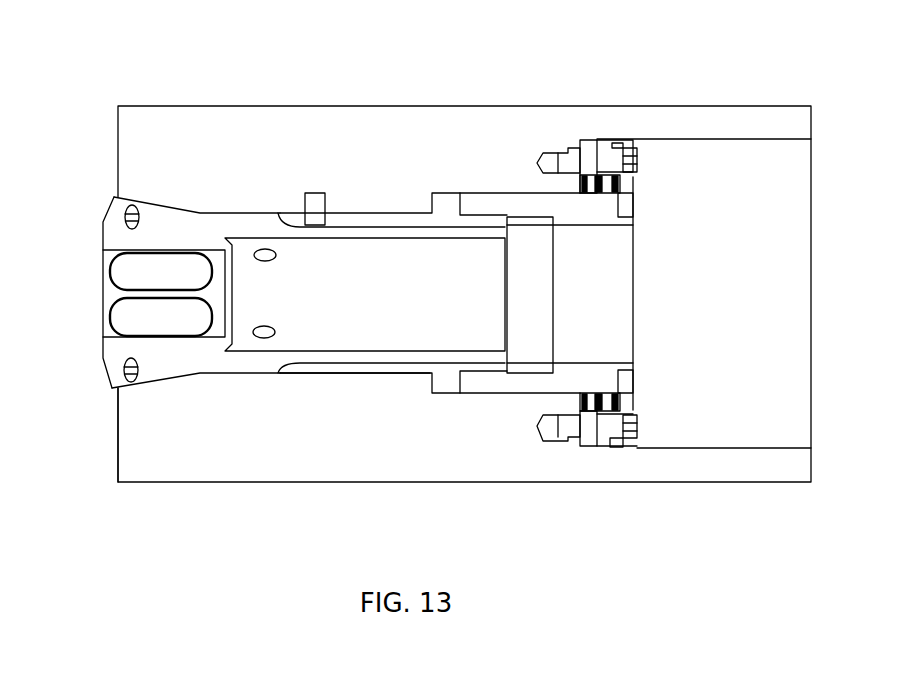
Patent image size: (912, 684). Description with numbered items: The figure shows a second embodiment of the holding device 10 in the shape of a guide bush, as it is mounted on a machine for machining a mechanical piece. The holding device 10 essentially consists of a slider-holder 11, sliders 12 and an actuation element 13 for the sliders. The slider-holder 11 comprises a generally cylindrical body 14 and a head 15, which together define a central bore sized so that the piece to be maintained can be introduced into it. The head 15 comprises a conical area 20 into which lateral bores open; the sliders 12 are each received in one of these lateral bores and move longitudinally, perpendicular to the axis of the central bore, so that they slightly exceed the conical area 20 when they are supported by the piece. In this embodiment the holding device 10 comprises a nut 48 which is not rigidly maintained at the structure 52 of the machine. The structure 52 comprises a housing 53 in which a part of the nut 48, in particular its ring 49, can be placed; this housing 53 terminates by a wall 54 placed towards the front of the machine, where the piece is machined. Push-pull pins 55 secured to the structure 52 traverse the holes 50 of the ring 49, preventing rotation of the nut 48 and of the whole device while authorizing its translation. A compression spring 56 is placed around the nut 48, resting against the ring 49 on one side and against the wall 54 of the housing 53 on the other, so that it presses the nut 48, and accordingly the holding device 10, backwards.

The holding device 10 is at (100, 207).
The slider-holder 11 is at (342, 375).
The sliders 12 is at (145, 269).
The actuation element 13 is at (116, 412).
The body 14 is at (295, 356).
The head 15 is at (152, 198).
The conical area 20 is at (158, 382).
The nut 48 is at (468, 383).
The ring 49 is at (618, 145).
The holes 50 is at (590, 438).
The structure 52 is at (442, 128).
The housing 53 is at (310, 196).
The wall 54 is at (360, 220).
The push-pull pins 55 is at (572, 160).
The compression spring 56 is at (600, 176).